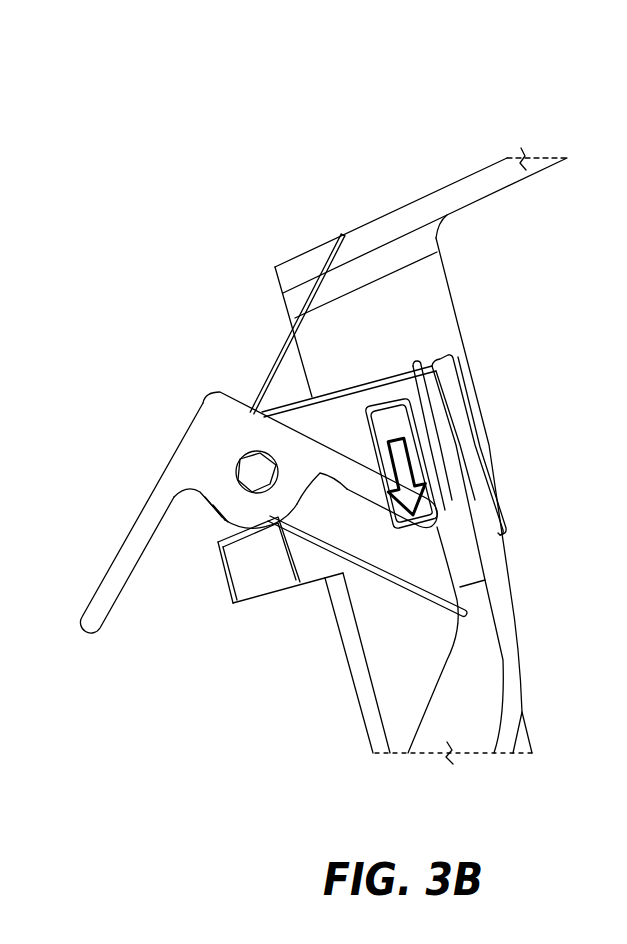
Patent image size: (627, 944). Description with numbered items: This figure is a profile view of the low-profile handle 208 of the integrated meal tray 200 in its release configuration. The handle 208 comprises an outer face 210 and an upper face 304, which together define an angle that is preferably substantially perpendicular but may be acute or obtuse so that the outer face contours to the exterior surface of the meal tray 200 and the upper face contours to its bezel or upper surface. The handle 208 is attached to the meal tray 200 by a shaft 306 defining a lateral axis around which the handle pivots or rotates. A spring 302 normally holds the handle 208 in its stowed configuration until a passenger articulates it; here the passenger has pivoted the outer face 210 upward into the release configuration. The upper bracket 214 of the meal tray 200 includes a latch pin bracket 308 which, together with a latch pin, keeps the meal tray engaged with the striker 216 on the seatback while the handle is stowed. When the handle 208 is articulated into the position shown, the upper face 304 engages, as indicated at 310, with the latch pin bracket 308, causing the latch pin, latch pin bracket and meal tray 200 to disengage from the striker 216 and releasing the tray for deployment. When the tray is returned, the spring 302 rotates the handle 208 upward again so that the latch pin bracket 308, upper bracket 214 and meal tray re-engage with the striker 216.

The meal tray 200 is at (146, 97).
The striker 216 is at (389, 228).
The spring 302 is at (283, 358).
The handle 208 is at (203, 396).
The outer face 210 is at (133, 534).
The shaft 306 is at (253, 474).
The upper face 304 is at (297, 450).
The latch pin bracket 308 is at (390, 428).
The engagement 310 is at (400, 470).
The upper bracket 214 is at (482, 687).